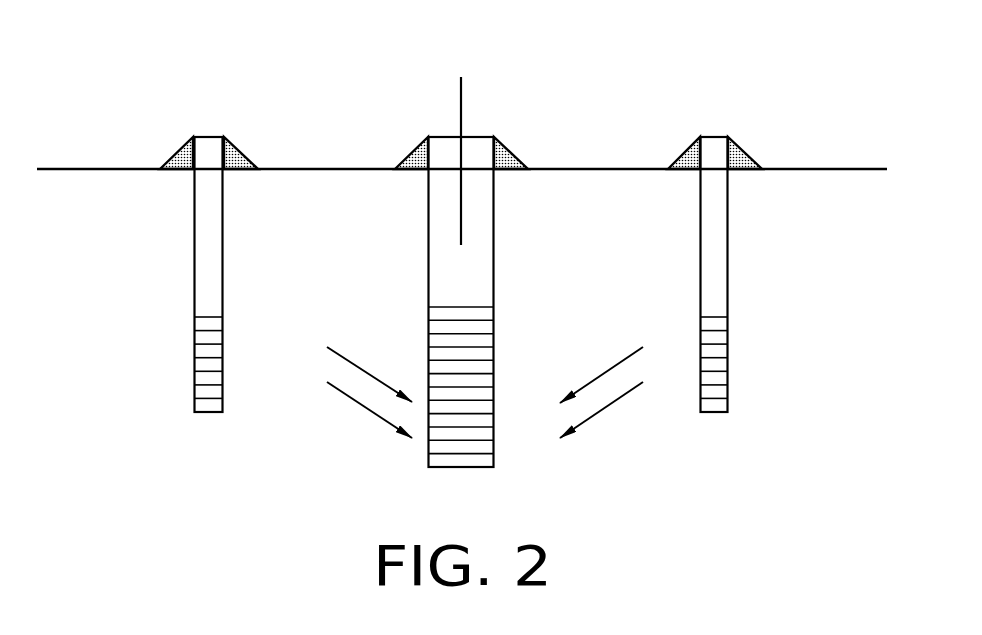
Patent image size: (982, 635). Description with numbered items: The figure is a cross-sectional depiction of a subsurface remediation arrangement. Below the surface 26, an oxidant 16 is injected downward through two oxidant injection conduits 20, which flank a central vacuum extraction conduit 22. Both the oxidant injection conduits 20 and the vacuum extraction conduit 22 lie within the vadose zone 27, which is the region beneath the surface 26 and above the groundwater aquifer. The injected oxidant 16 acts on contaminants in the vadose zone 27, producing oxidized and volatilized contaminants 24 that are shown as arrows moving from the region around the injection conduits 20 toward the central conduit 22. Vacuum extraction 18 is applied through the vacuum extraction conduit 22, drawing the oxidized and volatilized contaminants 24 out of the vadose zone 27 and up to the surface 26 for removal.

The oxidant 16 is at (469, 108).
The vacuum extraction 18 is at (461, 77).
The oxidant injection conduit 20 is at (182, 282).
The vacuum extraction conduit 22 is at (500, 258).
The oxidized and volatilized contaminants 24 is at (458, 392).
The surface 26 is at (843, 168).
The vadose zone 27 is at (773, 352).